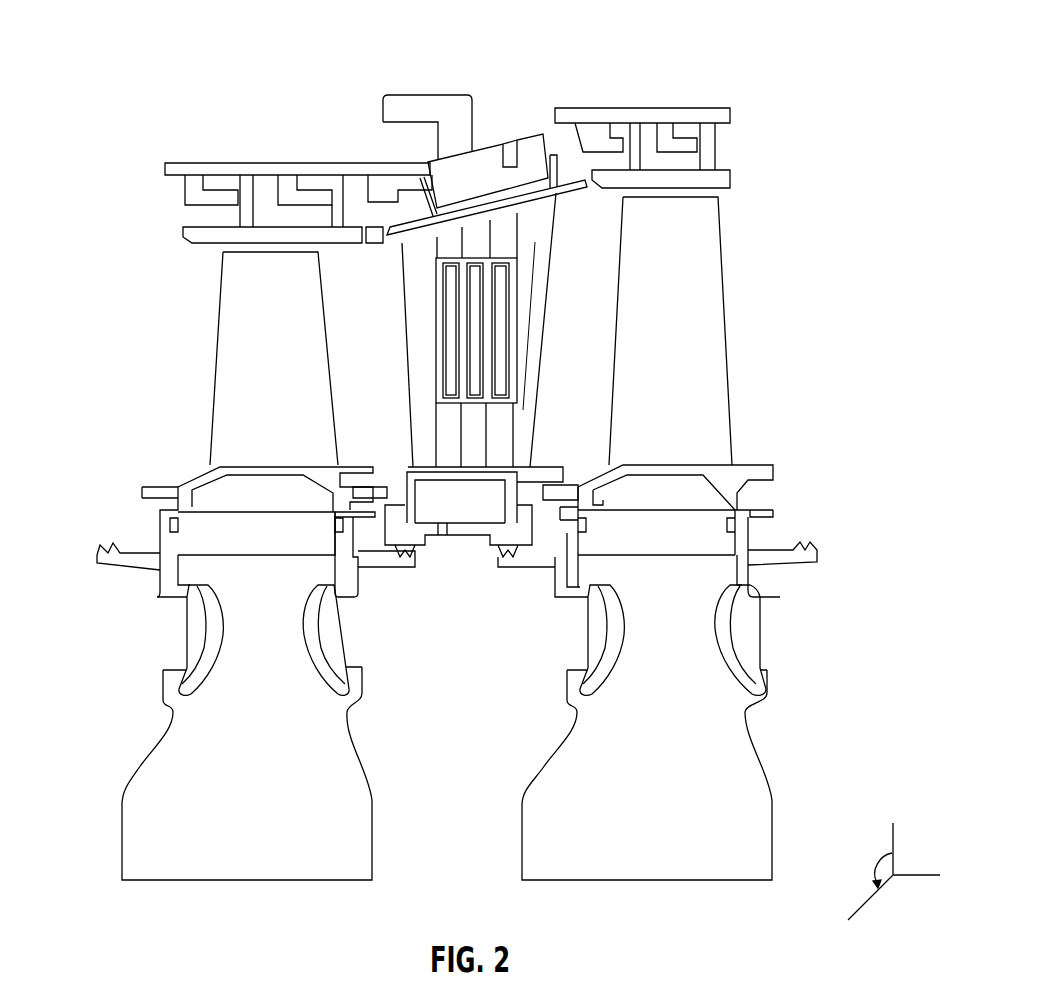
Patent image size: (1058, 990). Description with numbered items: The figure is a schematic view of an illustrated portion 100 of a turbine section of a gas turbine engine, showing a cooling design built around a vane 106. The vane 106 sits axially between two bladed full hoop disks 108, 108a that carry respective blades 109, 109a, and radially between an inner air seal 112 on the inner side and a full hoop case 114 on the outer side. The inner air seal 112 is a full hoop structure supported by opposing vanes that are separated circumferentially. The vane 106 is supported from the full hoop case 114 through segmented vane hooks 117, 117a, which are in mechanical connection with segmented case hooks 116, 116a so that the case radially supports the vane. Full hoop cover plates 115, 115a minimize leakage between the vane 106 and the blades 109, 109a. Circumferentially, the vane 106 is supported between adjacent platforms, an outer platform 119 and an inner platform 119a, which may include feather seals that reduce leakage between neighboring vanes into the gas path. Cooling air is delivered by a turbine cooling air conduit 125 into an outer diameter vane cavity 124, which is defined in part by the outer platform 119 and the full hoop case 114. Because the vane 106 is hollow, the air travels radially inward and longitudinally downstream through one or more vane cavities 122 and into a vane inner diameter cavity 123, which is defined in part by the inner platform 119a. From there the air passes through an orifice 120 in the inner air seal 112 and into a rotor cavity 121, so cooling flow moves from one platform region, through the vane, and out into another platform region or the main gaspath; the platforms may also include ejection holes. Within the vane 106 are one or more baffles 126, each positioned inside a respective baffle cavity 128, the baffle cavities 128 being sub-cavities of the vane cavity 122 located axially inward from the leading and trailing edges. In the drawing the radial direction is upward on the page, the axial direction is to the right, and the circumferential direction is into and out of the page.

The turbine section 100 is at (130, 66).
The vane 106 is at (484, 330).
The bladed full hoop disk 108 is at (752, 840).
The bladed full hoop disk 108a is at (142, 847).
The blade 109 is at (722, 295).
The blade 109a is at (220, 330).
The inner air seal 112 is at (545, 512).
The full hoop case 114 is at (728, 112).
The full hoop cover plate 115 is at (730, 627).
The full hoop cover plate 115a is at (330, 642).
The segmented case hook 116 is at (507, 147).
The segmented case hook 116a is at (380, 187).
The segmented vane hook 117 is at (544, 147).
The segmented vane hook 117a is at (407, 180).
The outer platform 119 is at (585, 172).
The inner platform 119a is at (411, 467).
The orifice 120 is at (447, 528).
The rotor cavity 121 is at (420, 752).
The vane cavity 122 is at (530, 308).
The vane inner diameter cavity 123 is at (455, 510).
The outer diameter vane cavity 124 is at (493, 165).
The turbine cooling air conduit 125 is at (397, 97).
The baffle 126 is at (437, 307).
The baffle cavity 128 is at (433, 355).